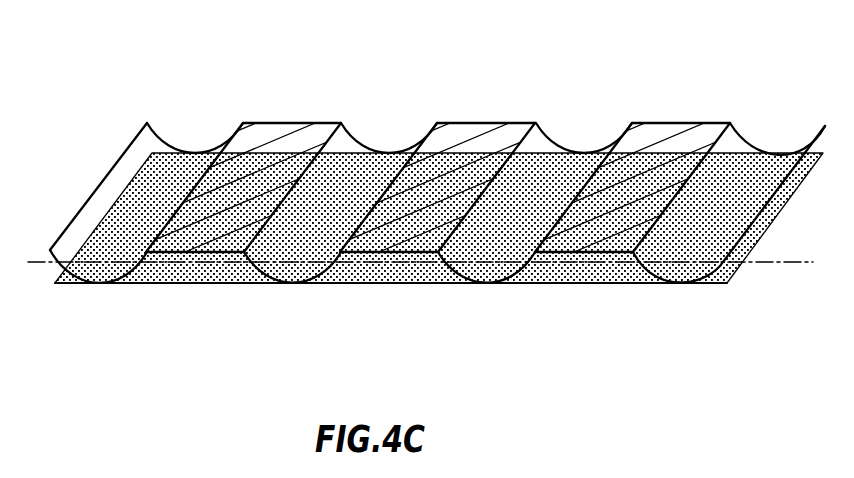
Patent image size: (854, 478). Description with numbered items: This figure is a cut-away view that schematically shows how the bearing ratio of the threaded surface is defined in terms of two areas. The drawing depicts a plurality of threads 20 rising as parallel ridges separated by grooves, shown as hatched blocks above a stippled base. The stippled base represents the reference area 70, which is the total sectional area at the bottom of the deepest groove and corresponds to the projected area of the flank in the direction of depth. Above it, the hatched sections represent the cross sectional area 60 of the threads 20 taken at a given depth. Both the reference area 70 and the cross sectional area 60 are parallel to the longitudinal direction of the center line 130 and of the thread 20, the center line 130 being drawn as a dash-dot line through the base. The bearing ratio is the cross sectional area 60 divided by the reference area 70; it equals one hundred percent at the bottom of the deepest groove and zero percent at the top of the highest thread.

The thread 20 is at (253, 125).
The cross sectional area 60 is at (330, 125).
The reference area 70 is at (722, 275).
The center line 130 is at (793, 262).